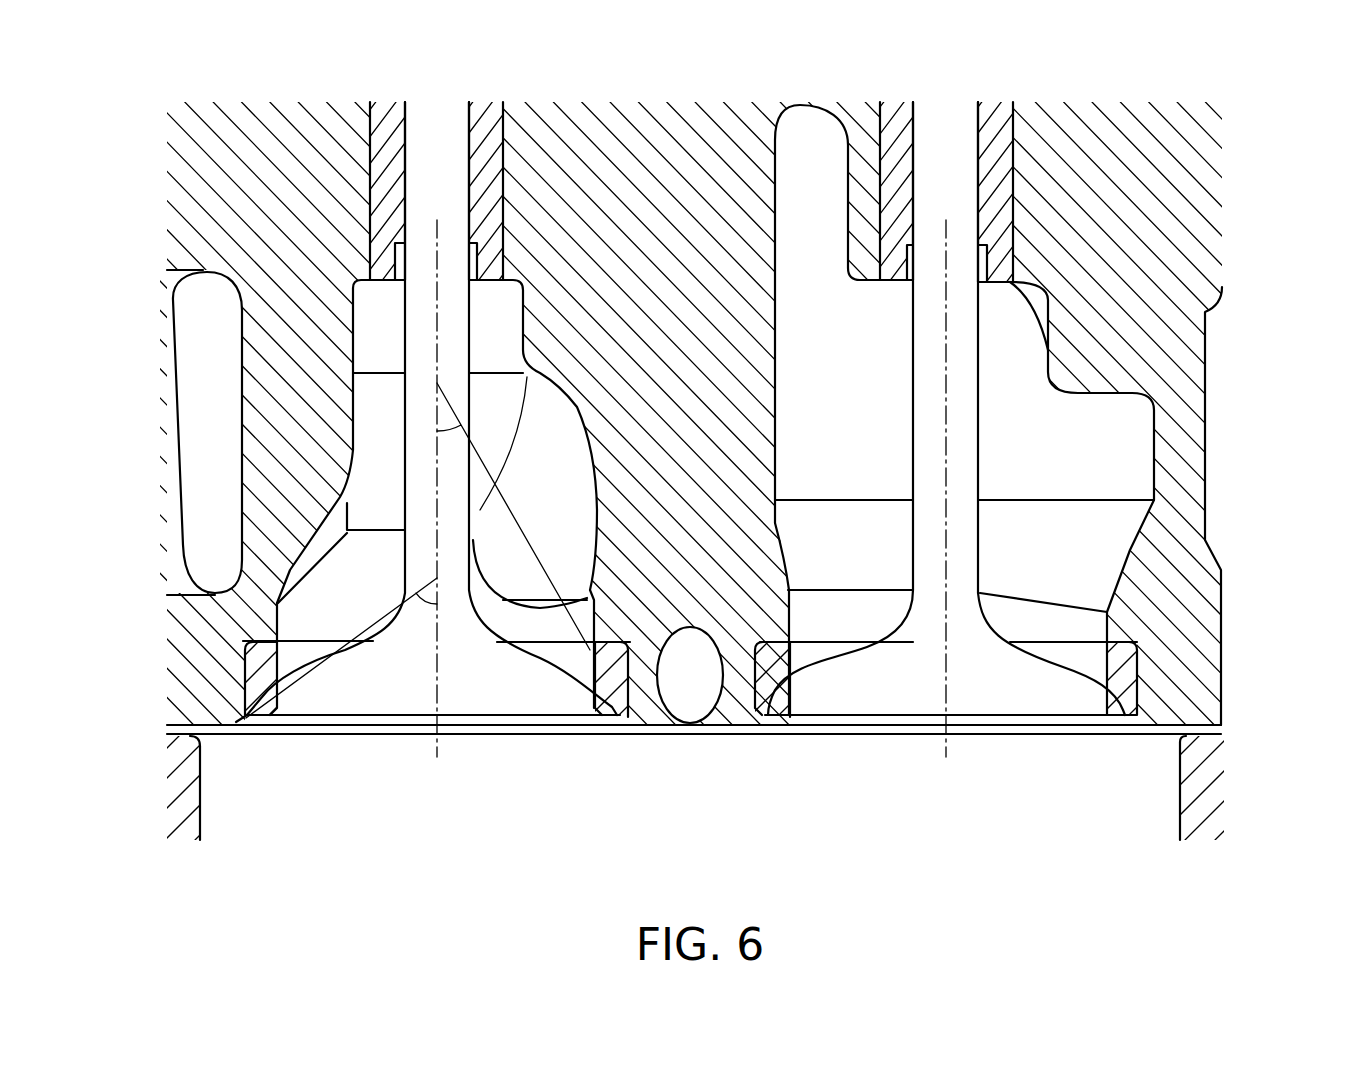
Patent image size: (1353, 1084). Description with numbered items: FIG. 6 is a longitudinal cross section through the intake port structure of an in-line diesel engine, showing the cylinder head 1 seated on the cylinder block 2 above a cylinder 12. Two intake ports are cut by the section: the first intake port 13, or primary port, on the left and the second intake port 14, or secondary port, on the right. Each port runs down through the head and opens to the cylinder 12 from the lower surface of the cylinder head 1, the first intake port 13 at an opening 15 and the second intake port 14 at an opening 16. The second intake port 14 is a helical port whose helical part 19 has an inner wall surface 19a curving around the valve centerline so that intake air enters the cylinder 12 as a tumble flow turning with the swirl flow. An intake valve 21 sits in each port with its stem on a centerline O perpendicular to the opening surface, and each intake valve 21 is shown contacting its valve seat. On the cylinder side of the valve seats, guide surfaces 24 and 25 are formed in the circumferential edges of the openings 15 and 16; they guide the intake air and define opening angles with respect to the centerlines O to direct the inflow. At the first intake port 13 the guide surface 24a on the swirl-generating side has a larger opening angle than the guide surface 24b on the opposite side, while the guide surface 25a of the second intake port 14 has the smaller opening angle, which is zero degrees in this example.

The cylinder head 1 is at (1213, 181).
The cylinder block 2 is at (1213, 767).
The cylinder 12 is at (1170, 797).
The first intake port 13 is at (380, 423).
The second intake port 14 is at (1027, 358).
The opening 15 is at (337, 724).
The opening 16 is at (1032, 720).
The helical part 19 is at (843, 180).
The inner wall surface 19a is at (777, 279).
The intake valve 21 is at (397, 700).
The guide surface 24 is at (248, 718).
The guide surface 24a is at (238, 720).
The guide surface 24b is at (623, 723).
The guide surface 25 is at (1138, 716).
The guide surface 25a is at (760, 723).
The centerline O is at (964, 795).